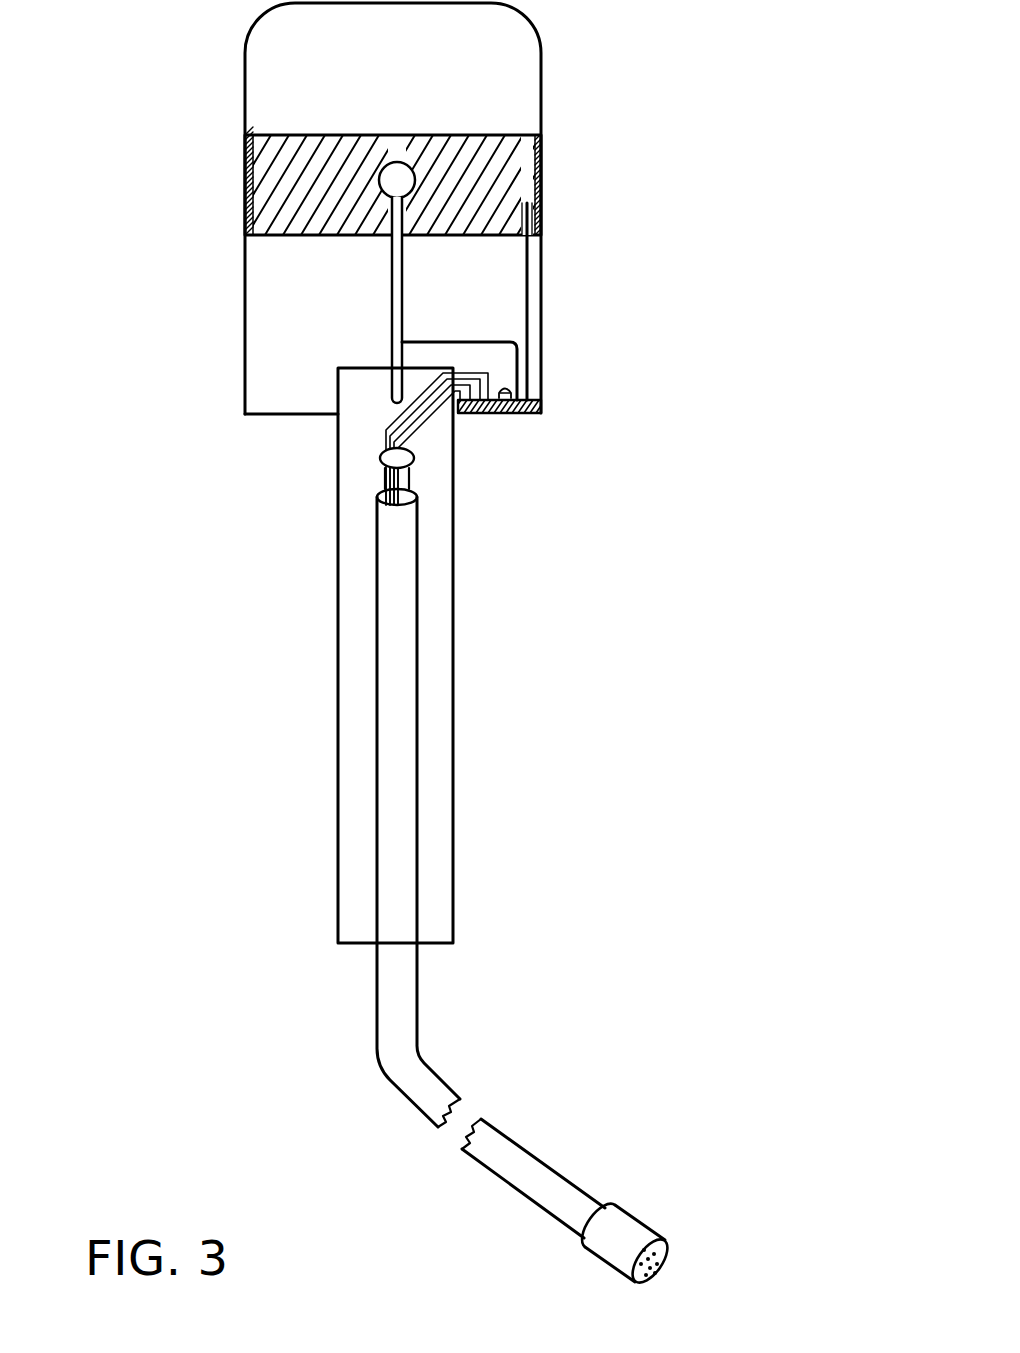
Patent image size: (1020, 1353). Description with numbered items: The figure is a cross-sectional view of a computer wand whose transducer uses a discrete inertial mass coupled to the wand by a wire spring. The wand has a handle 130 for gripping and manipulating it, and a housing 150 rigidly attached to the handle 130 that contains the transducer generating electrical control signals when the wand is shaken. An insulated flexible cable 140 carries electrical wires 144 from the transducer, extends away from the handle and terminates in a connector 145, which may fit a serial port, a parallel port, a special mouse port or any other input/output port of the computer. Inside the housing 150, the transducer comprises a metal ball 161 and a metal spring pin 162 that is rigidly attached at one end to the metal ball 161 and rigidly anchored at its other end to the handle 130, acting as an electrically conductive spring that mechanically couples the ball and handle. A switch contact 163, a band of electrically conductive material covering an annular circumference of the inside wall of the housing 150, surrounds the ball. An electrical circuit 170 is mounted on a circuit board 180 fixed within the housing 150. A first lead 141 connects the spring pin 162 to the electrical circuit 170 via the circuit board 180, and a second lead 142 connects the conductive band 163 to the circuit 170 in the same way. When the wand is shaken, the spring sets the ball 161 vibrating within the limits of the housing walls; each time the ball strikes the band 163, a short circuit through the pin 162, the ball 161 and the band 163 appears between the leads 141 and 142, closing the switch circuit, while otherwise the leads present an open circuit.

The handle 130 is at (440, 858).
The insulated flexible cable 140 is at (425, 1085).
The first lead 141 is at (420, 338).
The second lead 142 is at (529, 287).
The electrical wires 144 is at (411, 461).
The connector 145 is at (630, 1237).
The housing 150 is at (542, 70).
The metal ball 161 is at (397, 177).
The metal spring pin 162 is at (397, 312).
The switch contact 163 is at (542, 172).
The electrical circuit 170 is at (505, 393).
The circuit board 180 is at (498, 413).